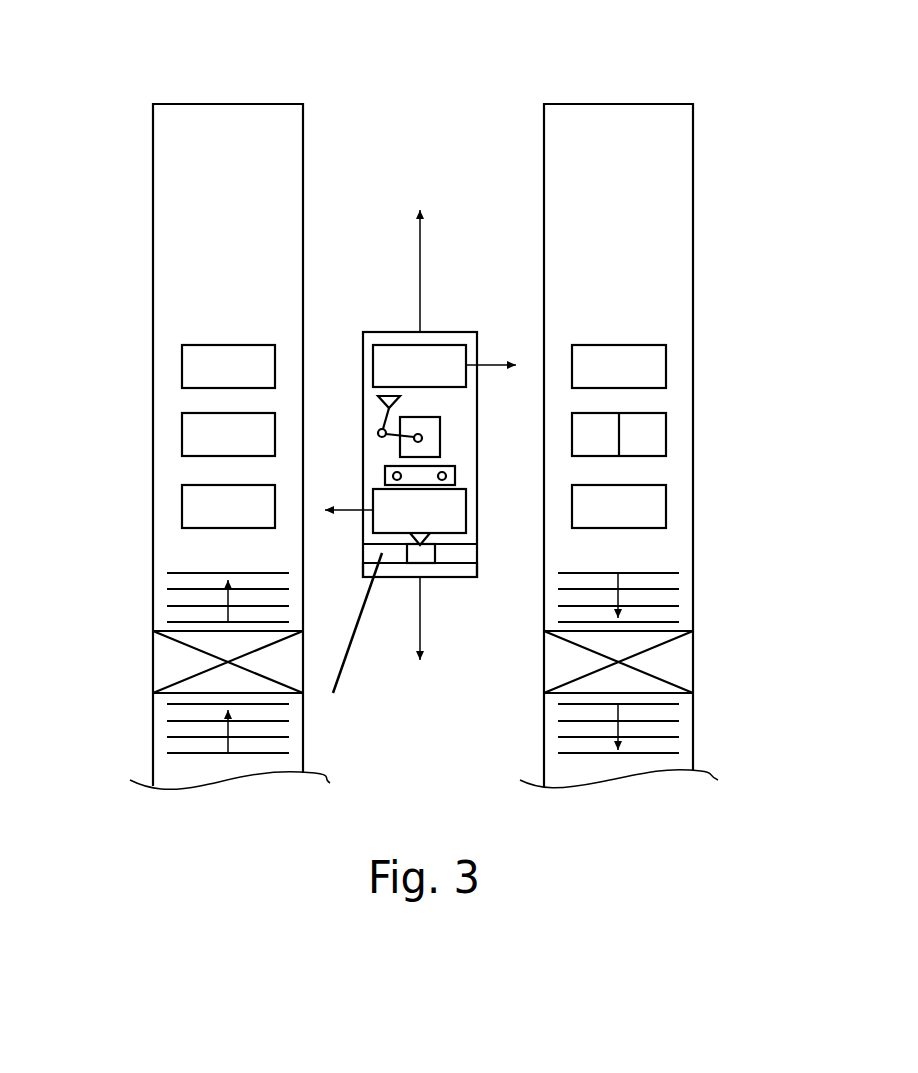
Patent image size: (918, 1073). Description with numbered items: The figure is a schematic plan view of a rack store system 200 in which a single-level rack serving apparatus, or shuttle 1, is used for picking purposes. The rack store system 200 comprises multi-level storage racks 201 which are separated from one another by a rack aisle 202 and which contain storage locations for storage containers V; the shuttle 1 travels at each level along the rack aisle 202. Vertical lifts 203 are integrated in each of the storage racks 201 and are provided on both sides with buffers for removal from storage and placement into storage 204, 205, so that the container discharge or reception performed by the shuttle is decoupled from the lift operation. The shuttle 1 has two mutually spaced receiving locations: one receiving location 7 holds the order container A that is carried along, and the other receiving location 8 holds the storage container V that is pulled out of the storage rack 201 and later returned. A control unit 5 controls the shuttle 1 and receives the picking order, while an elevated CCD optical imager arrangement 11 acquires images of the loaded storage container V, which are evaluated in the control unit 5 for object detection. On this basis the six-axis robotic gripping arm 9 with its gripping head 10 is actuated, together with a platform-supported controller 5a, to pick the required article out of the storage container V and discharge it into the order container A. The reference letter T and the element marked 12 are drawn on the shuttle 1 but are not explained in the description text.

The rack store system 200 is at (184, 90).
The multi-level storage rack 201 is at (170, 210).
The rack aisle 202 is at (447, 175).
The single-level rack serving apparatus 1 is at (460, 324).
The receiving location 7 is at (469, 345).
The transceiver unit T is at (363, 350).
The gripping head 10 is at (374, 402).
The robotic gripping arm 9 is at (455, 430).
The battery 12 is at (459, 473).
The receiving location 8 is at (470, 498).
The CCD optical imager arrangement 11 is at (418, 555).
The control unit 5 is at (456, 568).
The platform-supported controller 5a is at (347, 639).
The vertical lift 203 is at (708, 660).
The buffer for removal from storage and placement into storage 204 is at (695, 602).
The buffer for removal from storage and placement into storage 205 is at (711, 742).